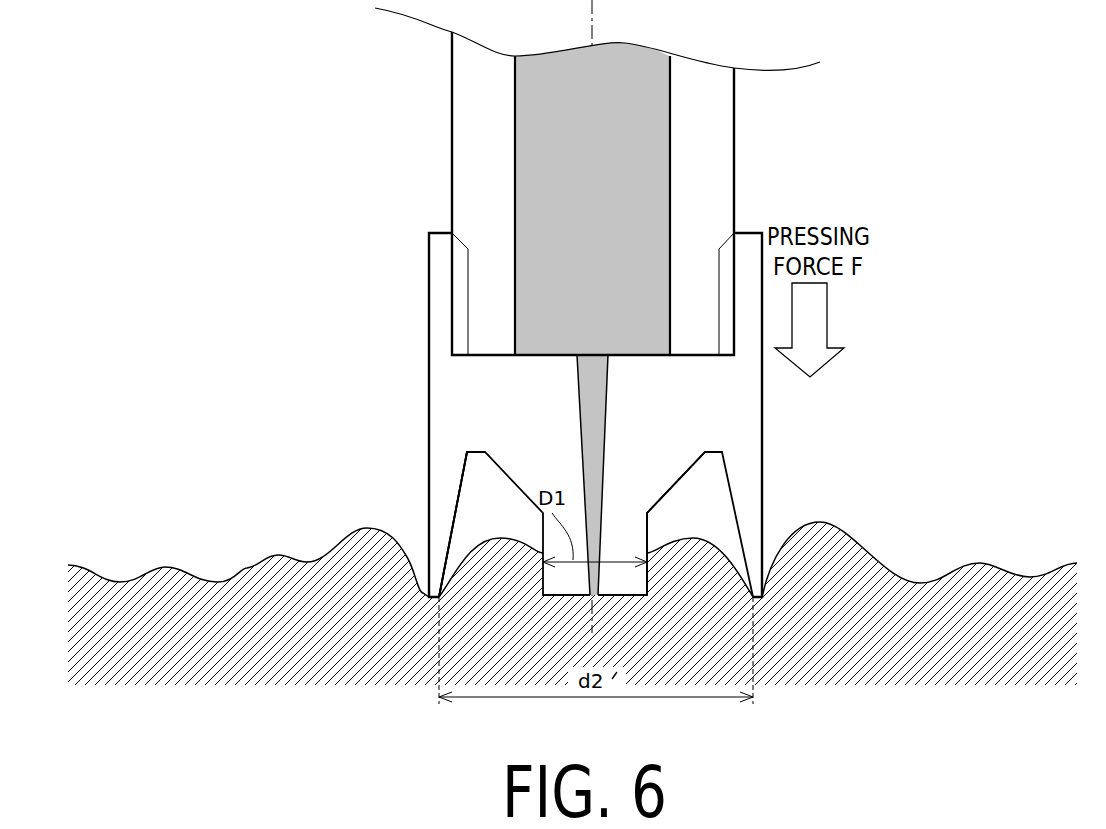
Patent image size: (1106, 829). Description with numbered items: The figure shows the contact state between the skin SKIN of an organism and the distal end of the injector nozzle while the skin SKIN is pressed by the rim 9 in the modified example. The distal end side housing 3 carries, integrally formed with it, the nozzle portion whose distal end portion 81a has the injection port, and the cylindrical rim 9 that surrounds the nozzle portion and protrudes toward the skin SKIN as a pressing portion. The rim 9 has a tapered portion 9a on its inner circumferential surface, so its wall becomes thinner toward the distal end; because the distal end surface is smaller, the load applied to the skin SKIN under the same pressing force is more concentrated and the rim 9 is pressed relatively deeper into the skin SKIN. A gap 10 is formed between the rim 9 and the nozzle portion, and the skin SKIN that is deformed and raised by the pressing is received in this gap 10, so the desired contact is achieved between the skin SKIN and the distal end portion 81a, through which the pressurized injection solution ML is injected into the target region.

The distal end side housing 3 is at (468, 397).
The rim 9 is at (447, 493).
The tapered portion 9a is at (455, 535).
The gap 10 is at (483, 492).
The distal end portion 81a is at (622, 537).
The injection solution ML is at (610, 133).
The skin of living body SKIN is at (983, 562).